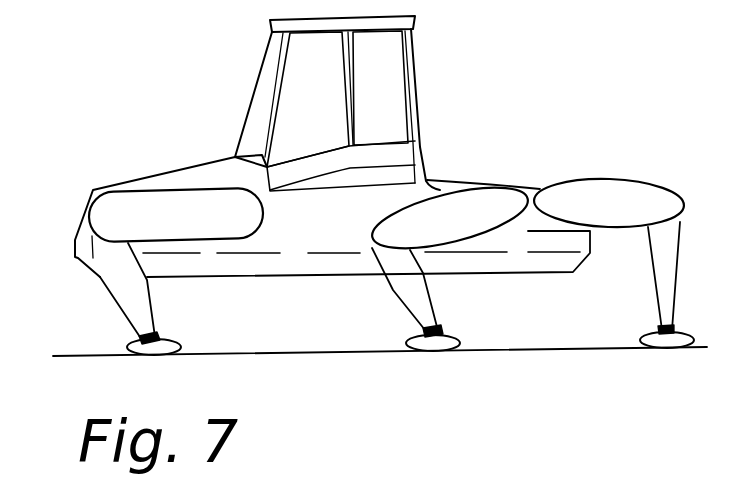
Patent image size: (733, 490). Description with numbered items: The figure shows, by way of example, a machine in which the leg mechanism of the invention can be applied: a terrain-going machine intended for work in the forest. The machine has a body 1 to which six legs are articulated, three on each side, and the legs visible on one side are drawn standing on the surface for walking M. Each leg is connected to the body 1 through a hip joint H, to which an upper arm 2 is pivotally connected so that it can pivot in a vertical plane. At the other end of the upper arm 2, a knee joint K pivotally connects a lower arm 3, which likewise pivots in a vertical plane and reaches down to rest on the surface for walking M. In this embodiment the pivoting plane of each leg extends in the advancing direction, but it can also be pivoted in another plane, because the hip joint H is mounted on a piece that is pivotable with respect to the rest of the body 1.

The body 1 is at (321, 280).
The upper arm 2 is at (147, 205).
The lower arm 3 is at (127, 283).
The hip joint H is at (243, 213).
The knee joint K is at (107, 225).
The surface for walking M is at (567, 347).